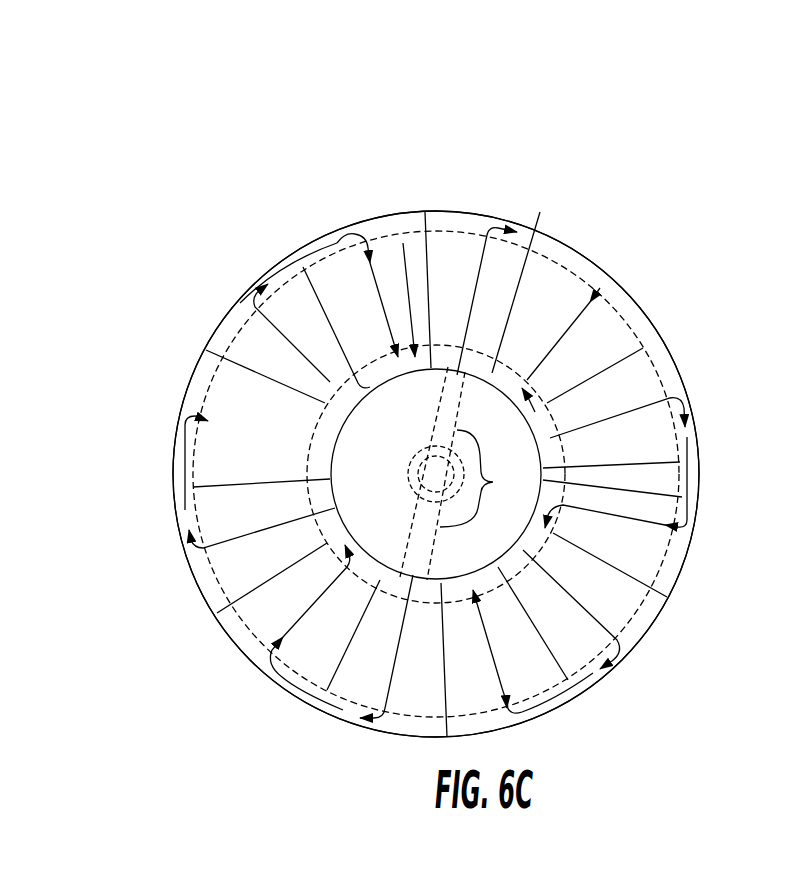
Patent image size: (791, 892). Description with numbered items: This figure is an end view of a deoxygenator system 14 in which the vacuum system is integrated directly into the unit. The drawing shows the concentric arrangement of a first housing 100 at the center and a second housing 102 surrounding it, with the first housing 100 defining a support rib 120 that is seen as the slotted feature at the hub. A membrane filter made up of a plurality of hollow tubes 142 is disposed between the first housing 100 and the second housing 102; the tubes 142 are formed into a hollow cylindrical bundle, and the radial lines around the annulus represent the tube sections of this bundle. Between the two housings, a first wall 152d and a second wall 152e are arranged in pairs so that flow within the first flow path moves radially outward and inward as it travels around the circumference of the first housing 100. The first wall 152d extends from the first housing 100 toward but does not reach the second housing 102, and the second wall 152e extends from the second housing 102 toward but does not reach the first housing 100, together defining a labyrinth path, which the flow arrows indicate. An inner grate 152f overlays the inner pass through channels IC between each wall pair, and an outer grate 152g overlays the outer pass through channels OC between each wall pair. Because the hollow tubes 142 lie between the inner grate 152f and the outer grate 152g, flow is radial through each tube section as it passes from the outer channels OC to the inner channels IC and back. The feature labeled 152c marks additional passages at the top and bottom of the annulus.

The deoxygenator system 14 is at (357, 118).
The first housing 100 is at (688, 498).
The second housing 102 is at (700, 463).
The support rib 120 is at (467, 473).
The hollow tubes 142 is at (505, 290).
The flow passage 152c is at (432, 232).
The first wall 152d is at (530, 297).
The second wall 152e is at (643, 348).
The inner grate 152f is at (192, 395).
The outer grate 152g is at (206, 350).
The inner pass through channels IC is at (283, 315).
The outer pass through channels OC is at (185, 414).